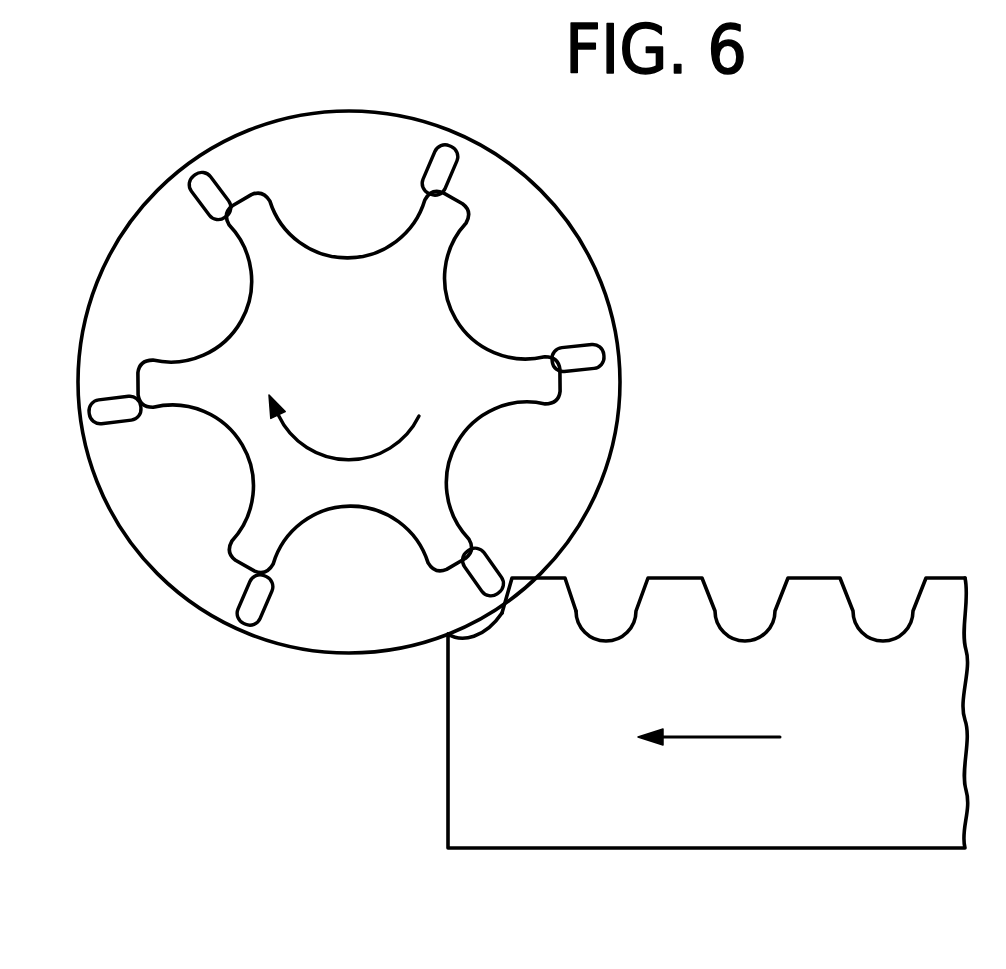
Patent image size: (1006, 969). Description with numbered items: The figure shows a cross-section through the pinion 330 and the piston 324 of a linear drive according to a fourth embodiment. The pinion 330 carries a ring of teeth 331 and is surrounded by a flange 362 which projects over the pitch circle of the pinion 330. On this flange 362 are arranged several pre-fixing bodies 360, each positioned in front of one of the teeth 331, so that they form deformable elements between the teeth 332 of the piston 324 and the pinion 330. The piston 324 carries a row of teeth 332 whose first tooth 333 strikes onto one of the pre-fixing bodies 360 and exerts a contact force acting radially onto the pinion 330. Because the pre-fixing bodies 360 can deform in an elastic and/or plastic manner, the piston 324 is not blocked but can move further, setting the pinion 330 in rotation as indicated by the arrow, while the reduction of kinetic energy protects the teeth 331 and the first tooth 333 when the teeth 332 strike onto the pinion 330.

The piston 324 is at (708, 715).
The pinion 330 is at (389, 307).
The teeth of the pinion 331 is at (433, 217).
The teeth of the piston 332 is at (820, 602).
The first tooth 333 is at (560, 600).
The pre-fixing bodies 360 is at (247, 608).
The flange 362 is at (150, 233).